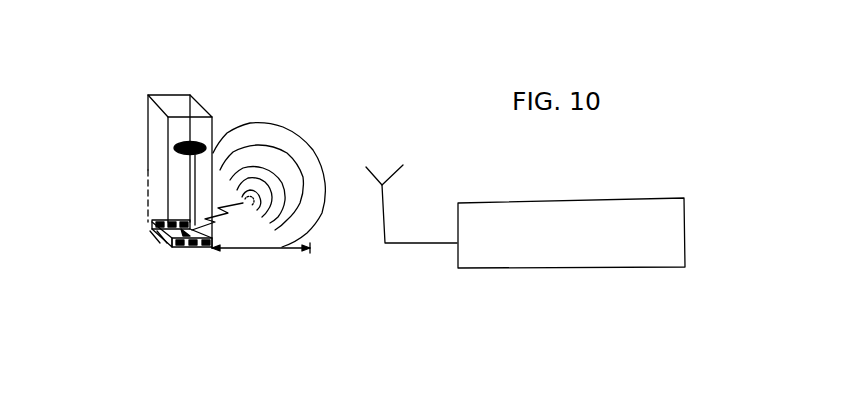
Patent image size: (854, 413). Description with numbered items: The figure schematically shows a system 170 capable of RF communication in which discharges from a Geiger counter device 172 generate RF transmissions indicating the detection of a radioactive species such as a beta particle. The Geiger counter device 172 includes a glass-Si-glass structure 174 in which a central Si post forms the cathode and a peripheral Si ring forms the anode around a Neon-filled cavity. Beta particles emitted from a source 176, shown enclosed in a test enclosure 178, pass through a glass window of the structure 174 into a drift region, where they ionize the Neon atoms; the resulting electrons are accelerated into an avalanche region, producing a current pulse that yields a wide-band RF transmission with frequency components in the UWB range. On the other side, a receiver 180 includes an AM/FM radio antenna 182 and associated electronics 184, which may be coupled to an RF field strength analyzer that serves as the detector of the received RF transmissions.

The system 170 is at (291, 300).
The Geiger counter device 172 is at (176, 254).
The glass-Si-glass structure 174 is at (160, 240).
The source 176 is at (178, 149).
The test enclosure 178 is at (150, 99).
The receiver 180 is at (459, 300).
The AM/FM radio antenna 182 is at (398, 178).
The associated electronics 184 is at (567, 268).